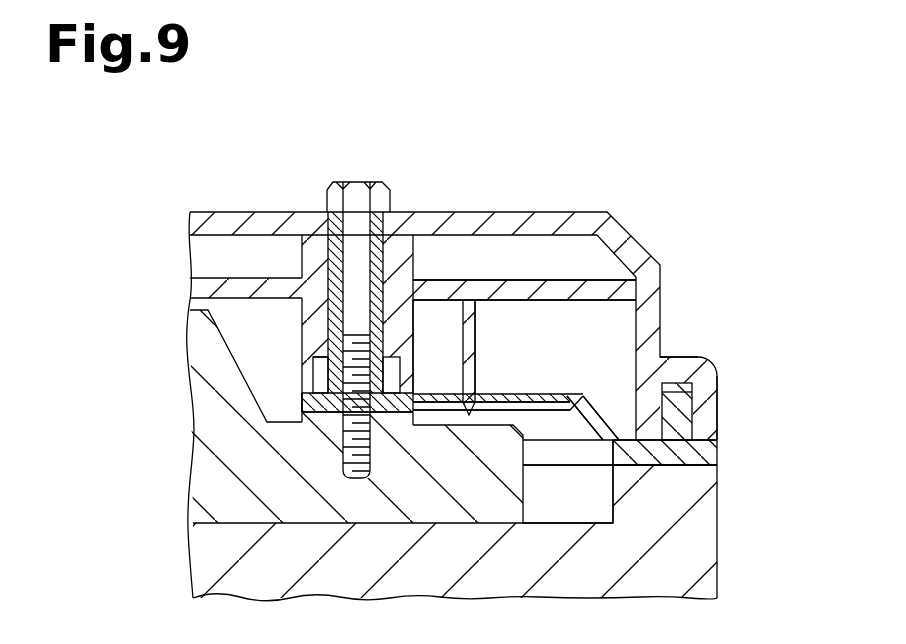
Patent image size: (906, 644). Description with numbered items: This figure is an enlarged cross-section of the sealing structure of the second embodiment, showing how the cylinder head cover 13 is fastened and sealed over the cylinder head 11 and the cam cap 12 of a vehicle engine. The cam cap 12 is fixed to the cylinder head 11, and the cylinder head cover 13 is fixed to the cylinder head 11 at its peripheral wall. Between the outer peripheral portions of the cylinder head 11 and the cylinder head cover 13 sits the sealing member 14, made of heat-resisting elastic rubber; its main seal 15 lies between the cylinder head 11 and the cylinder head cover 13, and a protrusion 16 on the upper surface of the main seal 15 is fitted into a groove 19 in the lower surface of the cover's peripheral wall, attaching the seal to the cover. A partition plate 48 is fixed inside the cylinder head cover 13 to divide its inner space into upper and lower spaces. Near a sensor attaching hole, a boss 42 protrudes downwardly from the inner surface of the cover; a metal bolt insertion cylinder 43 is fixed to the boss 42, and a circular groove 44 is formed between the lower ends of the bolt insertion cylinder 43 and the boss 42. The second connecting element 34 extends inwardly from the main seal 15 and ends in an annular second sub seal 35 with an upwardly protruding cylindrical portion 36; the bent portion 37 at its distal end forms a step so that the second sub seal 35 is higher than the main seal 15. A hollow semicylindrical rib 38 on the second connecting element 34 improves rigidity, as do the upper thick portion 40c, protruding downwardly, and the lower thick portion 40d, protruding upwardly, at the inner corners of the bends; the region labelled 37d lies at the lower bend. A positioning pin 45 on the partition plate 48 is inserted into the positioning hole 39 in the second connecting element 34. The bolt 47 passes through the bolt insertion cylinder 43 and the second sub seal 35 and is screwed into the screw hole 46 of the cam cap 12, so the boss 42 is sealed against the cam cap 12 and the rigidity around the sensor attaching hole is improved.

The cylinder head 11 is at (706, 546).
The cam cap 12 is at (190, 445).
The cylinder head cover 13 is at (573, 214).
The sealing member 14 is at (778, 462).
The main seal 15 is at (692, 464).
The protrusion 16 is at (693, 394).
The groove 19 is at (675, 385).
The second connecting element 34 is at (548, 393).
The second sub seal 35 is at (309, 403).
The cylindrical portion 36 is at (320, 356).
The bent portion 37 is at (576, 394).
The spring end portion 37d is at (568, 494).
The rib 38 is at (503, 393).
The positioning hole 39 is at (467, 398).
The upper thick portion 40c is at (580, 415).
The lower thick portion 40d is at (605, 433).
The boss 42 is at (407, 262).
The bolt insertion cylinder 43 is at (382, 232).
The circular groove 44 is at (322, 350).
The positioning pin 45 is at (476, 318).
The screw hole 46 is at (360, 453).
The bolt 47 is at (347, 181).
The partition plate 48 is at (527, 277).